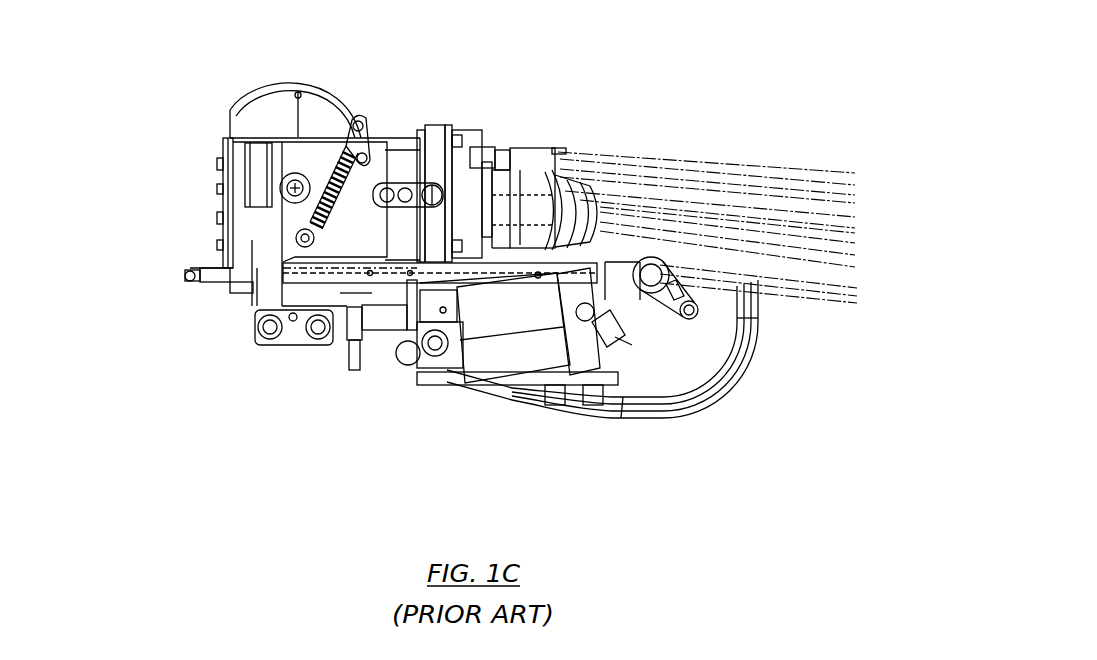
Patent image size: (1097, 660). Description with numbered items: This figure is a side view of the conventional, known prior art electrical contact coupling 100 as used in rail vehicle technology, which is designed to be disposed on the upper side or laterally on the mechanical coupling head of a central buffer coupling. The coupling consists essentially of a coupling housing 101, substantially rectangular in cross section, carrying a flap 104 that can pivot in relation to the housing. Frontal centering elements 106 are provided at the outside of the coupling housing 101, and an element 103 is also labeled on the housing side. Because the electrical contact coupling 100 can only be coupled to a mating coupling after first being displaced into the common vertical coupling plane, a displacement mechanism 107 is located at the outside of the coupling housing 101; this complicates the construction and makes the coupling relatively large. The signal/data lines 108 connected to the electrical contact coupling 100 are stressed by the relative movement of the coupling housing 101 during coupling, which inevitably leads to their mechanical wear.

The electrical contact coupling 100 is at (186, 30).
The coupling housing 101 is at (245, 252).
The mounting plate 103 is at (222, 180).
The flap 104 is at (278, 102).
The frontal centering elements 106 is at (197, 270).
The displacement mechanism 107 is at (676, 371).
The signal/data lines 108 is at (638, 214).